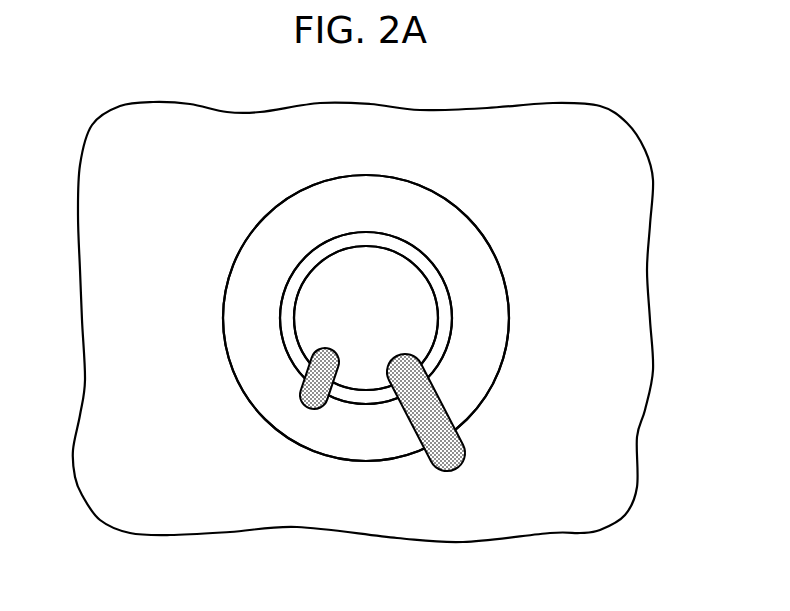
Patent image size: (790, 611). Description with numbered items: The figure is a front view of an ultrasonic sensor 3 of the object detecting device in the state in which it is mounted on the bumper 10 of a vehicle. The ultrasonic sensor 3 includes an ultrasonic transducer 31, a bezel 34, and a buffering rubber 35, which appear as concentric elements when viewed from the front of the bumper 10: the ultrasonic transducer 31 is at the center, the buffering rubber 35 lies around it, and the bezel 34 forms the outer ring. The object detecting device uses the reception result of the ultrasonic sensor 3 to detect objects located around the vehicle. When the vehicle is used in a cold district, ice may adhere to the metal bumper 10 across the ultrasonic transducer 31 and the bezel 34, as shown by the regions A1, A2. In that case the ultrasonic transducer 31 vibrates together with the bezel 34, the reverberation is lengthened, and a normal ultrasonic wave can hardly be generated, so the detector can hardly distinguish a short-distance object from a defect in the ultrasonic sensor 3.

The bumper 10 is at (620, 138).
The ultrasonic sensor 3 is at (284, 191).
The ultrasonic transducer 31 is at (381, 266).
The bezel 34 is at (440, 236).
The buffering rubber 35 is at (440, 295).
The region A1 is at (307, 403).
The region A2 is at (468, 457).